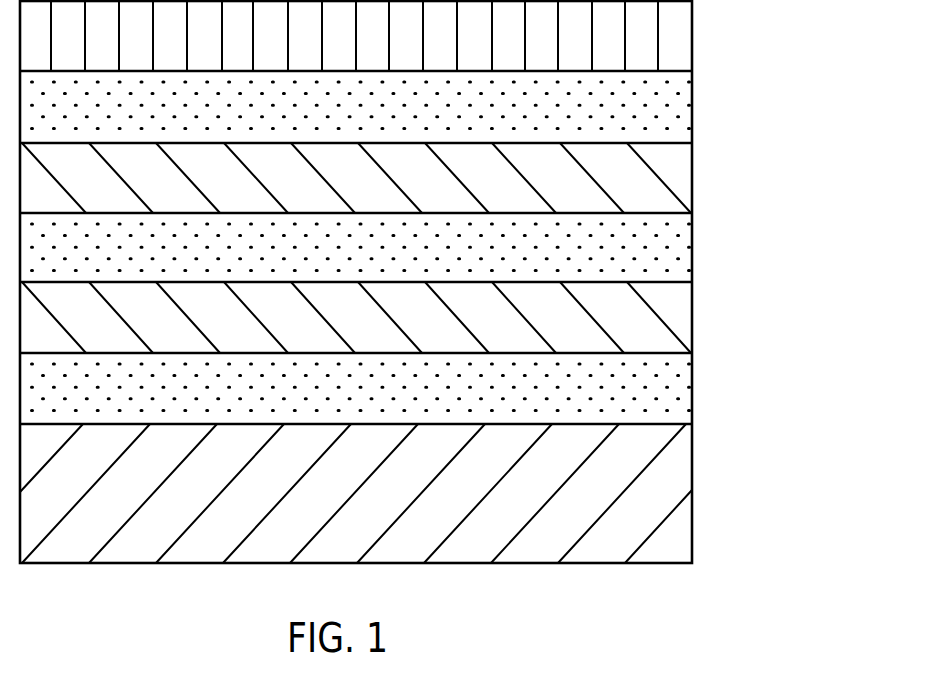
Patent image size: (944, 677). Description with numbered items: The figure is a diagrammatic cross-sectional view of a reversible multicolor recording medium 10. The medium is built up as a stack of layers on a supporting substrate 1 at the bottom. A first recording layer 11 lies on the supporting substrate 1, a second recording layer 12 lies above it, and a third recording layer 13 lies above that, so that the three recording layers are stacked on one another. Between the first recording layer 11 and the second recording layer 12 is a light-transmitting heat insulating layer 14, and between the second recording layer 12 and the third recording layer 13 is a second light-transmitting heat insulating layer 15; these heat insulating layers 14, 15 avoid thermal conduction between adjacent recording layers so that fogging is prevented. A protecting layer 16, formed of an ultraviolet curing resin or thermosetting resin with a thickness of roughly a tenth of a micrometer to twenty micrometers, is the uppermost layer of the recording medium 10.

The reversible multicolor recording medium 10 is at (817, 613).
The supporting substrate 1 is at (660, 472).
The first recording layer 11 is at (662, 394).
The heat insulating layer 14 is at (648, 331).
The second recording layer 12 is at (655, 259).
The heat insulating layer 15 is at (652, 194).
The third recording layer 13 is at (663, 118).
The protecting layer 16 is at (673, 44).